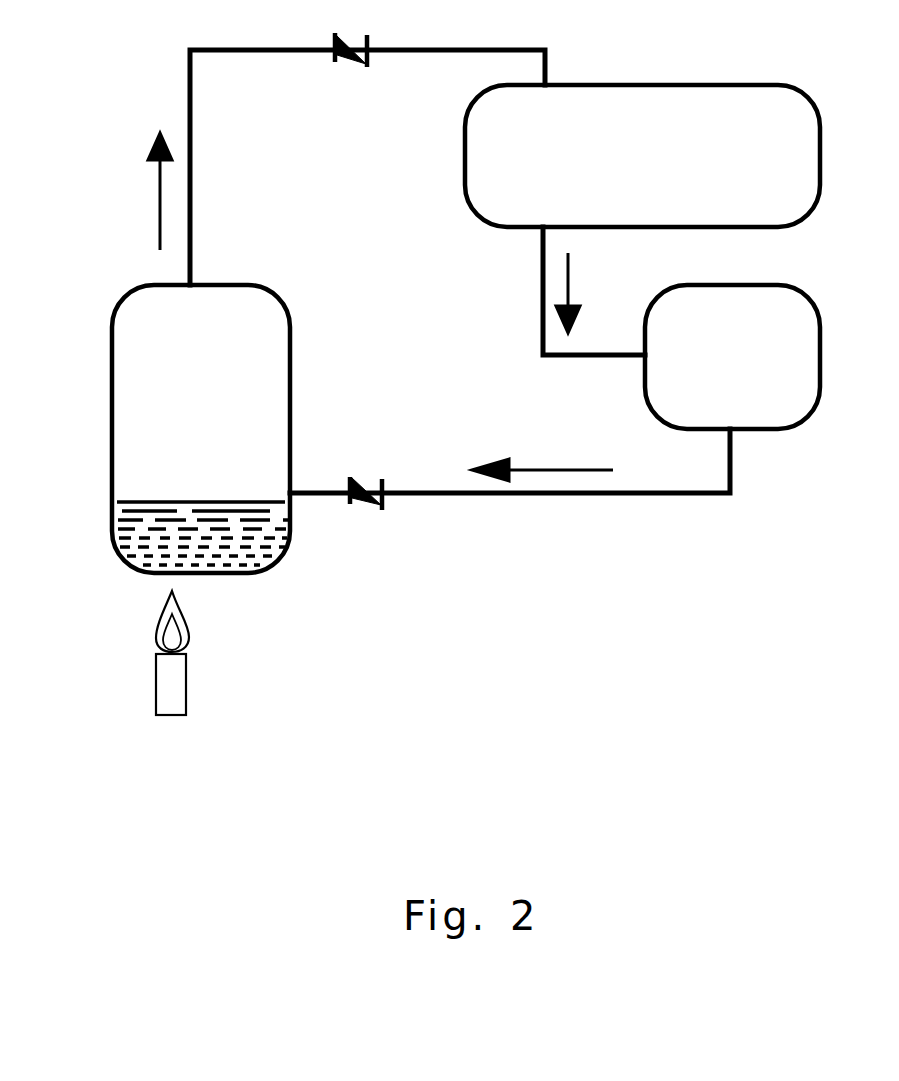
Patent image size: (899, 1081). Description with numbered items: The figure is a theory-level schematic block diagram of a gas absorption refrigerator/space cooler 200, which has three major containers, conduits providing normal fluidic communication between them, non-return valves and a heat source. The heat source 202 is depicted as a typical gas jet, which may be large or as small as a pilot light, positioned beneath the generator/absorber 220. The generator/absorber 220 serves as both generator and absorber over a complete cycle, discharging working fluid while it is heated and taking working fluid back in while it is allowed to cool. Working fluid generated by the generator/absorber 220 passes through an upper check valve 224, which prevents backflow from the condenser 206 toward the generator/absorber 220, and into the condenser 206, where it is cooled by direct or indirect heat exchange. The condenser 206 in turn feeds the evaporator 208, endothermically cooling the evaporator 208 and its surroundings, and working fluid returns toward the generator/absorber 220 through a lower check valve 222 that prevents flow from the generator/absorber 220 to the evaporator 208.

The gas absorption refrigerator/space cooler 200 is at (167, 790).
The heat source 202 is at (170, 678).
The condenser 206 is at (642, 156).
The evaporator 208 is at (732, 357).
The generator/absorber 220 is at (201, 429).
The check valve 222 is at (370, 505).
The check valve 224 is at (336, 46).